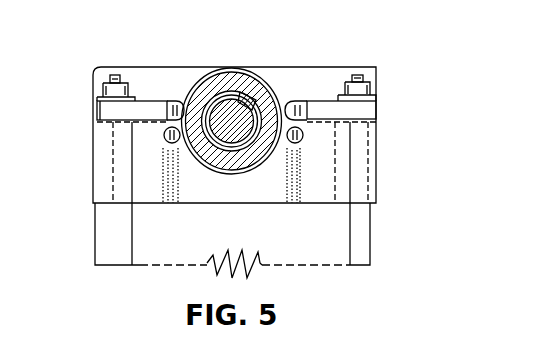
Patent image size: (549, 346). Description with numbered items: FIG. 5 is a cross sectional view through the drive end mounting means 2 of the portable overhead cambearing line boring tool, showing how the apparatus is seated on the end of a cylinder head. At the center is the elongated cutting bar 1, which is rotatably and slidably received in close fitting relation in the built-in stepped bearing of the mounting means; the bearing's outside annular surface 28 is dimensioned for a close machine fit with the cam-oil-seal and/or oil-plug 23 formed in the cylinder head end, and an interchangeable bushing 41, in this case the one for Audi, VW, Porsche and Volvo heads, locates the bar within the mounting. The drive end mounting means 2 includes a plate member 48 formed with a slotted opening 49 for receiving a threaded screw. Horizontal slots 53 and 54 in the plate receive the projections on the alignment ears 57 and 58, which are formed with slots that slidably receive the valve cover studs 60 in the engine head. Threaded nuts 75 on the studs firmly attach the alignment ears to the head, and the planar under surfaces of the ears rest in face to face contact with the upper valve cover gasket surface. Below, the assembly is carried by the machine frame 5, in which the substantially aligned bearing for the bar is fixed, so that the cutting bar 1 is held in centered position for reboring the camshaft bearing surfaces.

The cutting bar 1 is at (246, 96).
The drive end mounting means 2 is at (377, 62).
The machine frame 5 is at (370, 240).
The cam-oil-seal and/or oil-plug 23 is at (280, 85).
The outside annular surface 28 is at (225, 92).
The bushing 41 is at (195, 75).
The plate member 48 is at (376, 168).
The slotted opening 49 is at (298, 122).
The horizontal slot 53 is at (300, 101).
The horizontal slot 54 is at (178, 101).
The alignment ear 57 is at (367, 110).
The alignment ear 58 is at (110, 111).
The valve cover stud 60 is at (115, 75).
The threaded nut 75 is at (103, 90).